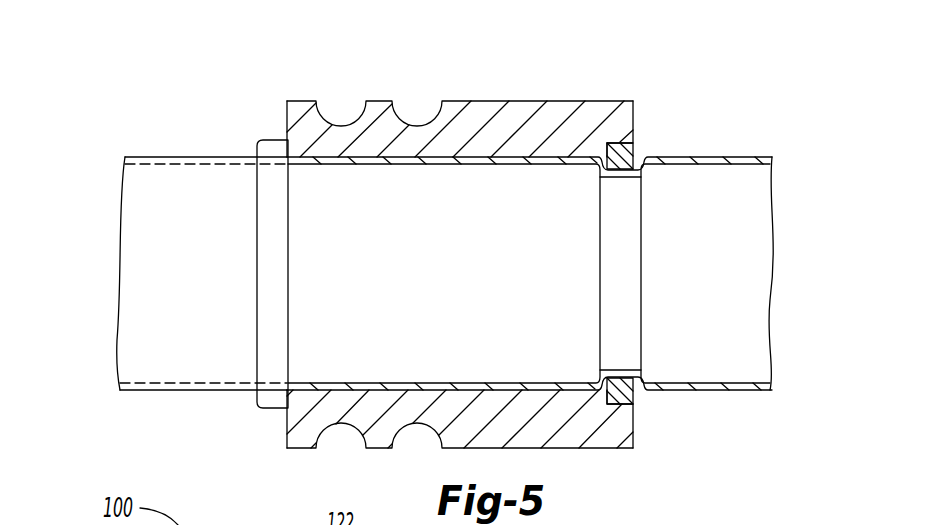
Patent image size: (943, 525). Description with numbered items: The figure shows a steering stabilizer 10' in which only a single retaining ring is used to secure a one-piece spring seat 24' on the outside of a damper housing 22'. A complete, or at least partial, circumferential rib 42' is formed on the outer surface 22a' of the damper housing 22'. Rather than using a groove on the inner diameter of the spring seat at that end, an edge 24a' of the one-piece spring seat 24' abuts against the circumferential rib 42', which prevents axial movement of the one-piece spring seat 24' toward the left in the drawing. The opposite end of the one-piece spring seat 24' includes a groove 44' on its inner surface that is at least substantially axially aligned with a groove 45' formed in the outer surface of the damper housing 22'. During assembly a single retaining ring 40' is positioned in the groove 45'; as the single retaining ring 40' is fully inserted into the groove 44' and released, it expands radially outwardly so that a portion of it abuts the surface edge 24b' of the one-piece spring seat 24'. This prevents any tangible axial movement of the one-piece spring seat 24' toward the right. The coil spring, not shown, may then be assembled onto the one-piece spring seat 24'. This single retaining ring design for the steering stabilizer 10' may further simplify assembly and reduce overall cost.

The steering stabilizer 10' is at (407, 230).
The damper housing 22' is at (407, 272).
The outer surface of the damper housing 22a' is at (164, 243).
The one-piece spring seat 24' is at (411, 255).
The edge of the one-piece spring seat 24a' is at (239, 258).
The surface edge of the one-piece spring seat 24b' is at (584, 274).
The single retaining ring 40' is at (695, 273).
The circumferential rib 42' is at (242, 260).
The groove 44' is at (655, 143).
The groove 45' is at (662, 410).